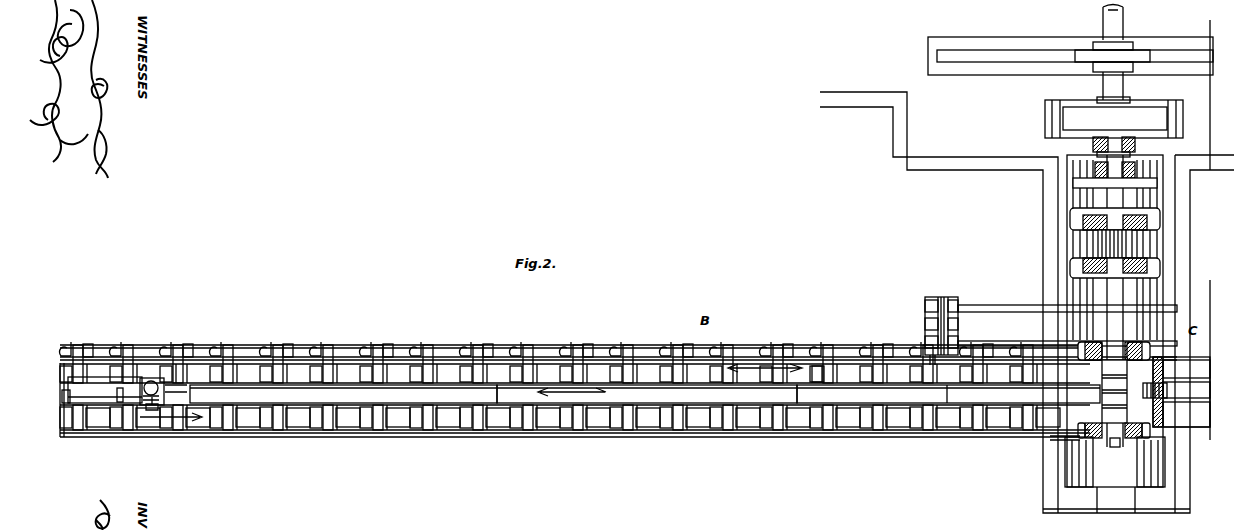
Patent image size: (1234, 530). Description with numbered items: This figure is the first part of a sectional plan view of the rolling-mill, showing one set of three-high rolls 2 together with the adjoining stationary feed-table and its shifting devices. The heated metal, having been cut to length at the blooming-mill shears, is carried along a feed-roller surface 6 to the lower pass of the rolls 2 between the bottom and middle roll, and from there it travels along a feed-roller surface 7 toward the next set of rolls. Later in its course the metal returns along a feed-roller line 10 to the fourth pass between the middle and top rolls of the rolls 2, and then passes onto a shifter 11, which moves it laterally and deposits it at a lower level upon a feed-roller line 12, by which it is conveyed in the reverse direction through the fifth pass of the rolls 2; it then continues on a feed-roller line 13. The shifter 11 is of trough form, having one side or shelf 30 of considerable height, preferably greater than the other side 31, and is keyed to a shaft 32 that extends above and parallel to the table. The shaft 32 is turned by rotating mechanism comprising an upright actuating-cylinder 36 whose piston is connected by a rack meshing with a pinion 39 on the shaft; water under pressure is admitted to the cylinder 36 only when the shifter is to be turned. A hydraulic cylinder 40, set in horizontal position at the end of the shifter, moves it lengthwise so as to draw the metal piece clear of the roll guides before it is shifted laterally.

The rolls 2 is at (1107, 334).
The feed-roller surface 6 is at (62, 420).
The feed-roller surface 7 is at (1186, 414).
The feed-roller line 10 is at (1176, 391).
The shifter 11 is at (948, 392).
The feed-roller line 12 is at (829, 372).
The feed-roller line 13 is at (1186, 369).
The side or shelf 30 is at (343, 394).
The other side 31 is at (554, 396).
The shaft 32 is at (173, 392).
The actuating-cylinder 36 is at (152, 376).
The pinion 39 is at (153, 407).
The hydraulic cylinder 40 is at (83, 397).